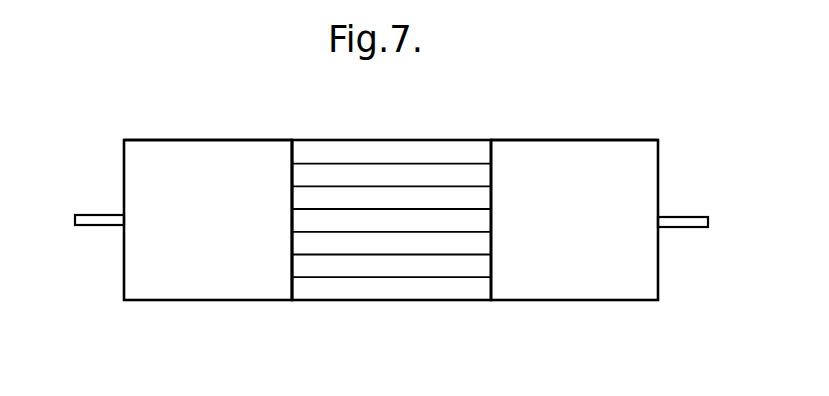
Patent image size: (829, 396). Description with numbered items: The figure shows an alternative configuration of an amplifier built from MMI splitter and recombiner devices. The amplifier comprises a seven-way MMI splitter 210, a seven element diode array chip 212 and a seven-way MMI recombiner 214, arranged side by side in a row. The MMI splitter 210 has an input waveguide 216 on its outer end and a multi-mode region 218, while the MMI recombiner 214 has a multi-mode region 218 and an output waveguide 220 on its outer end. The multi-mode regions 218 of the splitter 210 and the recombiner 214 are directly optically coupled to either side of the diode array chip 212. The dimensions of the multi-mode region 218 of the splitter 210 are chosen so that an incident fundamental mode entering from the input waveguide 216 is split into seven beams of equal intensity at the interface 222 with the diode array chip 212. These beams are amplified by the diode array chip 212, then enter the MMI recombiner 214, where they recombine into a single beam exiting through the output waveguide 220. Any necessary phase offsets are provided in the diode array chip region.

The 7-way MMI splitter 210 is at (290, 304).
The 7 element diode array chip 212 is at (490, 304).
The 7-way MMI recombiner 214 is at (710, 304).
The input waveguide 216 is at (88, 213).
The multi-mode region 218 is at (154, 150).
The output waveguide 220 is at (688, 218).
The interface 222 is at (292, 141).